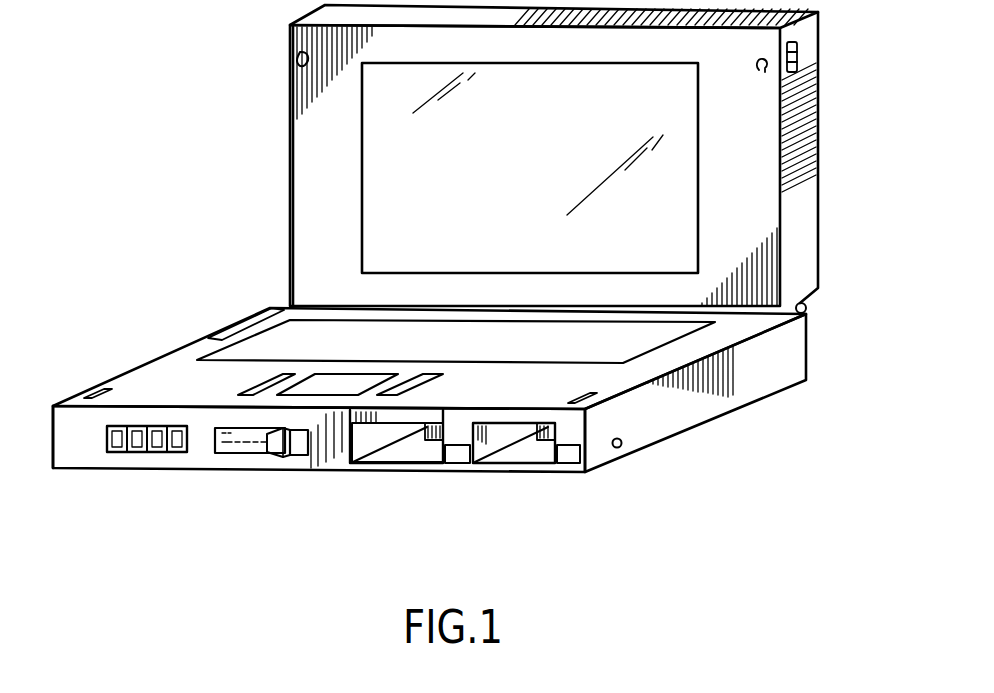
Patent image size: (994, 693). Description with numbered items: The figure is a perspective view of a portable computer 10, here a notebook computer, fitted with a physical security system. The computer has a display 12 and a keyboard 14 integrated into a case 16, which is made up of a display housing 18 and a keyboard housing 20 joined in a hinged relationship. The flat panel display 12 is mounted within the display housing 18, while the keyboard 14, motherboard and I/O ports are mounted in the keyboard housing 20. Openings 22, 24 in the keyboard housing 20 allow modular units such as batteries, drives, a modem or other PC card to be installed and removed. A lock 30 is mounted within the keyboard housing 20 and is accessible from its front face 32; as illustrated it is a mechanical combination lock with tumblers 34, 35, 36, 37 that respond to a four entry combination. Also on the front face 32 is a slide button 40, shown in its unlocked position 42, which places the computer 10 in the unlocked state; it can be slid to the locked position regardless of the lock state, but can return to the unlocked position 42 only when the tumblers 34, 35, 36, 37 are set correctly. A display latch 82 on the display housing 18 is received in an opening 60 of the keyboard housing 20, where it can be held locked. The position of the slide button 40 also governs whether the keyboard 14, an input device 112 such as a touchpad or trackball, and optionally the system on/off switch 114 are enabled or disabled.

The portable computer 10 is at (845, 30).
The display 12 is at (542, 178).
The keyboard 14 is at (488, 355).
The case 16 is at (807, 343).
The display housing 18 is at (820, 150).
The keyboard housing 20 is at (748, 405).
The opening 22 is at (400, 463).
The opening 24 is at (524, 464).
The lock 30 is at (130, 466).
The front face 32 is at (82, 462).
The tumbler 34 is at (118, 427).
The tumbler 35 is at (138, 427).
The tumbler 36 is at (152, 454).
The tumbler 37 is at (172, 454).
The slide button 40 is at (280, 453).
The unlocked position 42 is at (253, 466).
The opening 60 is at (98, 388).
The display latch 82 is at (300, 66).
The input device 112 is at (348, 380).
The system on/off switch 114 is at (626, 449).